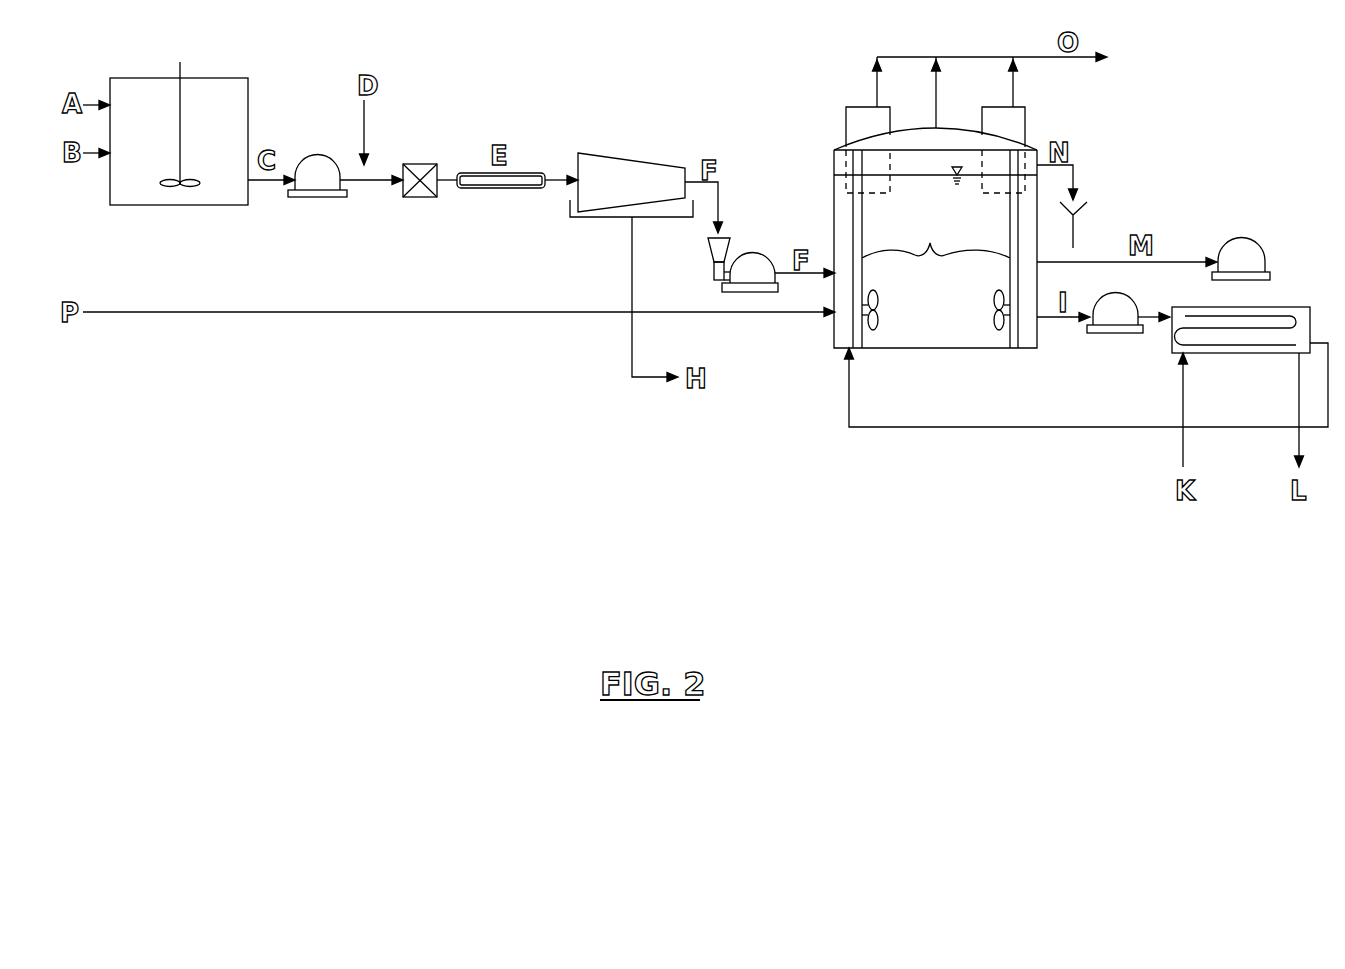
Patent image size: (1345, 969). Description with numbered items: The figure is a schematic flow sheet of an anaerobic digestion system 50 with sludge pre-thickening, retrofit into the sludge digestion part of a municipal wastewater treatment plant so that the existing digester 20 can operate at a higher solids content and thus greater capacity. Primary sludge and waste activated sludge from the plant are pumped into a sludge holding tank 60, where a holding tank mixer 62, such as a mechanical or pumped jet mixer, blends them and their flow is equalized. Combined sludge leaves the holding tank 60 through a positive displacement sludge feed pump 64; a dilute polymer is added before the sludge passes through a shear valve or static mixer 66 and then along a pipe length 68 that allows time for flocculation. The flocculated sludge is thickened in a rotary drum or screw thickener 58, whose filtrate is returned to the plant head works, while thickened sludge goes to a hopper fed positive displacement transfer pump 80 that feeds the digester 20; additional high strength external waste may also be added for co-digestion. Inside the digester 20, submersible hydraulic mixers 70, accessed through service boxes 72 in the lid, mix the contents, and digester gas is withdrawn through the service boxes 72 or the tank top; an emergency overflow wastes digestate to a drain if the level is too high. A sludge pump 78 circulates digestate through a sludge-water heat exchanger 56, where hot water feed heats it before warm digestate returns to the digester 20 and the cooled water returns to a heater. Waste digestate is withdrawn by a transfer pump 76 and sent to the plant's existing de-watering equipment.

The digester 20 is at (1000, 350).
The anaerobic digestion system 50 is at (285, 568).
The sludge-water heat exchanger 56 is at (1255, 353).
The rotary drum or screw thickener 58 is at (672, 168).
The sludge holding tank 60 is at (180, 205).
The holding tank mixer 62 is at (183, 130).
The positive displacement sludge feed pump 64 is at (314, 158).
The shear valve or static mixer 66 is at (420, 163).
The pipe length 68 is at (475, 190).
The mixers 70 is at (936, 238).
The service boxes 72 is at (846, 115).
The transfer pump 76 is at (1258, 242).
The sludge pump 78 is at (1093, 333).
The transfer pump 80 is at (765, 258).